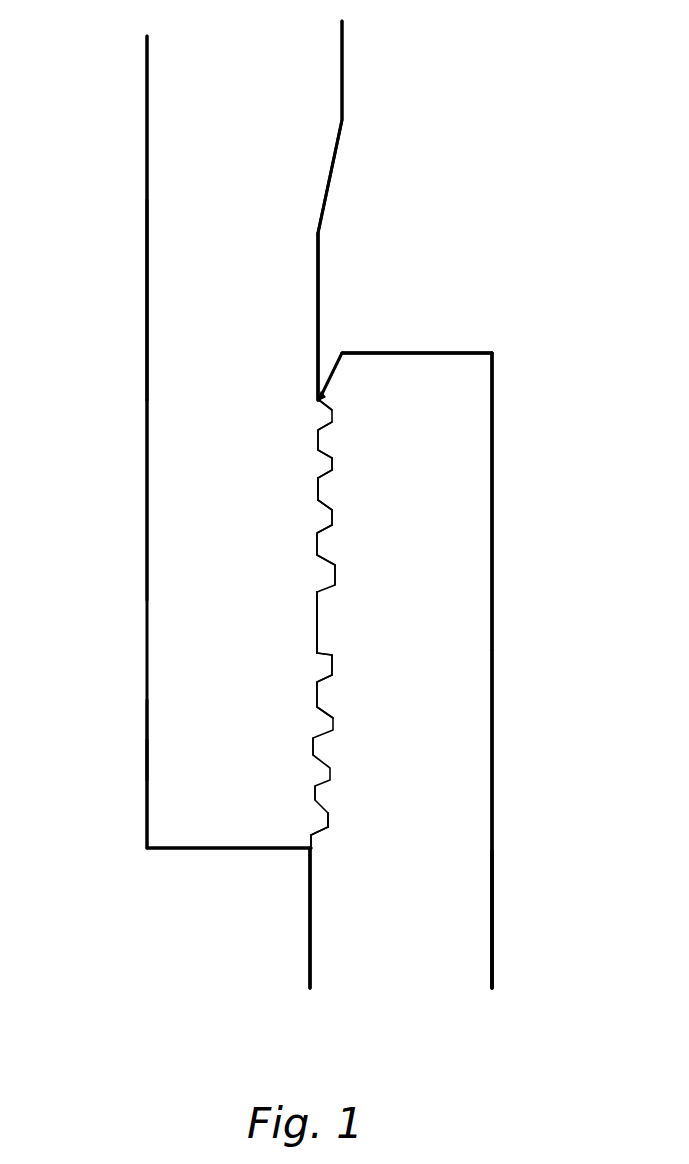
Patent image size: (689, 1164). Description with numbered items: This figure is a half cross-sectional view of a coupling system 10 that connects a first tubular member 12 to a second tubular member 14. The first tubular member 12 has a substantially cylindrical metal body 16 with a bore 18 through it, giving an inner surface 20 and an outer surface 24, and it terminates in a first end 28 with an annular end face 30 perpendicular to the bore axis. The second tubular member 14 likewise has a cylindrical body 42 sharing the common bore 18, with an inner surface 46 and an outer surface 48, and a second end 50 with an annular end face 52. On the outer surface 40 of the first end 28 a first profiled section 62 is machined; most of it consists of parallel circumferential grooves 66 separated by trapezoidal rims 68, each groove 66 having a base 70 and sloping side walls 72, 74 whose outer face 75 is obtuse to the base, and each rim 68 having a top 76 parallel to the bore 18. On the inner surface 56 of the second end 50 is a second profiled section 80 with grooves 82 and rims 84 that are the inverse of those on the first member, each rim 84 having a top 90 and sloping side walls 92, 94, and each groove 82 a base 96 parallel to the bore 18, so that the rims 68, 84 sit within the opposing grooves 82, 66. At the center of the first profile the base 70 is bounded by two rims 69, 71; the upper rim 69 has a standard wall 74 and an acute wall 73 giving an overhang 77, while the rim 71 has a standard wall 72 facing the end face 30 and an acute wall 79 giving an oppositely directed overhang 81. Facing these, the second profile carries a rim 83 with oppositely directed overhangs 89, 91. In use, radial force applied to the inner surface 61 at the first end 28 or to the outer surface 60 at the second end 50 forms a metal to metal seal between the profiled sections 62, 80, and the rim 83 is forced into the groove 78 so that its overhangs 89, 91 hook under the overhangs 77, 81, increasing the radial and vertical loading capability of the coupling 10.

The coupling system 10 is at (492, 236).
The first tubular member 12 is at (165, 485).
The second tubular member 14 is at (492, 662).
The cylindrical body 16 is at (217, 156).
The bore 18 is at (40, 165).
The inner surface 20 is at (147, 291).
The outer surface 24 is at (319, 240).
The first end 28 is at (147, 765).
The annular end face 30 is at (165, 852).
The outer surface 40 is at (305, 835).
The cylindrical body 42 is at (377, 953).
The inner surface 46 is at (308, 955).
The outer surface 48 is at (492, 955).
The second end 50 is at (492, 578).
The annular end face 52 is at (472, 352).
The inner surface 56 is at (333, 699).
The outer surface 60 is at (492, 775).
The inner surface 61 is at (147, 742).
The first profiled section 62 is at (318, 596).
The grooves 66 is at (313, 758).
The rims 68 is at (332, 518).
The upper rim 69 is at (318, 567).
The base 70 is at (318, 438).
The rim 71 is at (317, 710).
The sloping side wall 72 is at (320, 405).
The sloping wall 73 is at (318, 620).
The sloping side wall 74 is at (322, 462).
The outer face 75 is at (328, 812).
The top 76 is at (318, 524).
The overhang 77 is at (335, 578).
The groove 78 is at (318, 625).
The sloping wall 79 is at (332, 660).
The second profiled section 80 is at (322, 845).
The overhang 81 is at (330, 655).
The grooves 82 is at (333, 470).
The rim 83 is at (318, 628).
The rims 84 is at (321, 502).
The overhang 89 is at (318, 592).
The top 90 is at (320, 490).
The overhang 91 is at (318, 665).
The sloping side wall 92 is at (320, 479).
The sloping side wall 94 is at (320, 511).
The base 96 is at (328, 822).